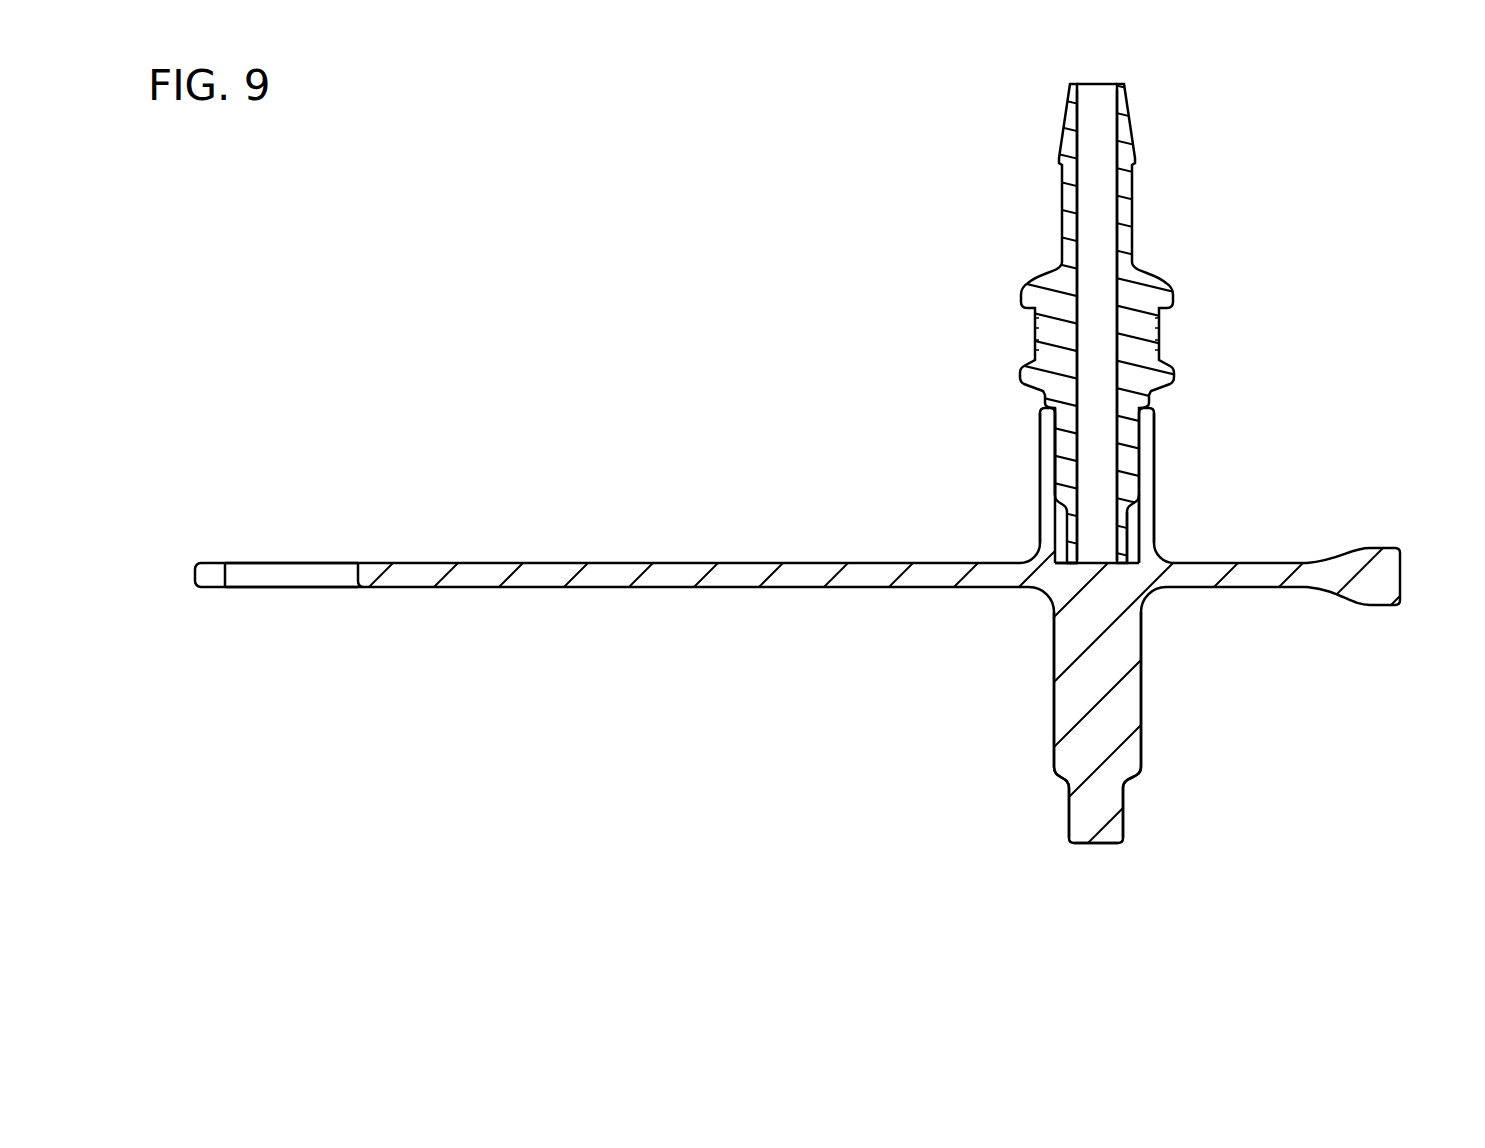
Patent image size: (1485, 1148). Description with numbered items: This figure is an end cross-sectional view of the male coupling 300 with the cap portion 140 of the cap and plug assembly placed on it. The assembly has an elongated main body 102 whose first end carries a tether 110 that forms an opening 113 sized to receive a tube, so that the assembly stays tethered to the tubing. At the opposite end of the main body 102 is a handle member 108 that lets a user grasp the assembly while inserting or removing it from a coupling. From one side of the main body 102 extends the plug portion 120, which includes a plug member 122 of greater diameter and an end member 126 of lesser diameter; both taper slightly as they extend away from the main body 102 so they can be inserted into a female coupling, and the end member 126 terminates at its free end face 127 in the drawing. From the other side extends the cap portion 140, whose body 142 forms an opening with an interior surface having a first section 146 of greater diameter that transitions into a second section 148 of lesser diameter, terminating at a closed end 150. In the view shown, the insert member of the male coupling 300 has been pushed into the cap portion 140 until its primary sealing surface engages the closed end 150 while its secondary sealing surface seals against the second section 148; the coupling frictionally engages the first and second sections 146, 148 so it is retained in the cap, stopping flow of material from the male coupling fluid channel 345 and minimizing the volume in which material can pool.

The male coupling 300 is at (1010, 160).
The male coupling fluid channel 345 is at (1103, 185).
The body 142 is at (1040, 434).
The first section 146 is at (1057, 480).
The cap portion 140 is at (1193, 453).
The closed end 150 is at (1080, 565).
The second section 148 is at (1128, 536).
The handle member 108 is at (1387, 565).
The opening 113 is at (286, 570).
The main body 102 is at (670, 570).
The tether 110 is at (207, 582).
The plug member 122 is at (1060, 667).
The plug portion 120 is at (1170, 756).
The end member 126 is at (1081, 815).
The bottom surface 127 is at (1102, 845).